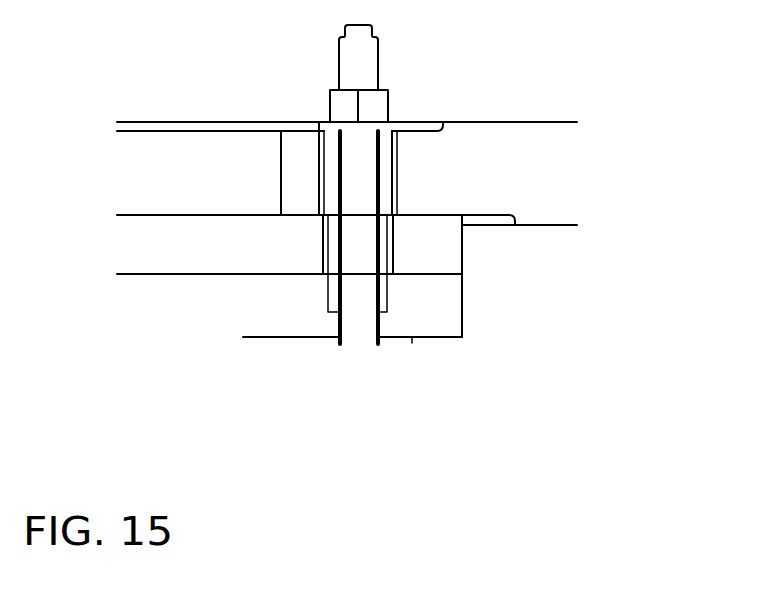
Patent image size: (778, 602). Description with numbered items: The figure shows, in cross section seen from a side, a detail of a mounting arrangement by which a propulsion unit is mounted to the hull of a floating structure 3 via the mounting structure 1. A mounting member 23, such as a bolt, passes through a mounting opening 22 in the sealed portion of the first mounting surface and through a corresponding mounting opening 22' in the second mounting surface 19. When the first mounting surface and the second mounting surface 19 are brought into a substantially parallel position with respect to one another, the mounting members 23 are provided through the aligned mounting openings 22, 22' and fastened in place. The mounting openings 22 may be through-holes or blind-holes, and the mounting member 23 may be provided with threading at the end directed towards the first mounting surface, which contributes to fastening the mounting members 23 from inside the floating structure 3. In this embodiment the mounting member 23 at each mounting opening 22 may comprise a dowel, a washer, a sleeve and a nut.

The mounting structure 1 is at (453, 317).
The floating structure 3 is at (555, 173).
The second mounting surface 19 is at (440, 268).
The mounting openings 22 is at (408, 314).
The mounting openings 22' is at (247, 236).
The mounting members 23 is at (363, 157).